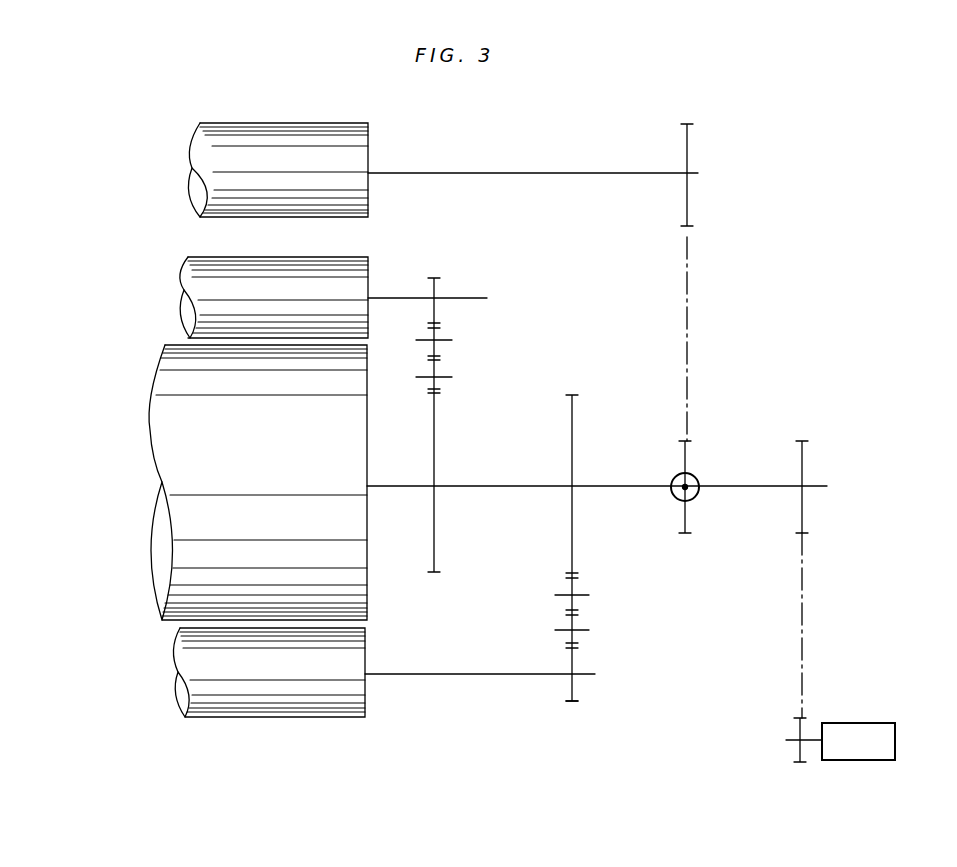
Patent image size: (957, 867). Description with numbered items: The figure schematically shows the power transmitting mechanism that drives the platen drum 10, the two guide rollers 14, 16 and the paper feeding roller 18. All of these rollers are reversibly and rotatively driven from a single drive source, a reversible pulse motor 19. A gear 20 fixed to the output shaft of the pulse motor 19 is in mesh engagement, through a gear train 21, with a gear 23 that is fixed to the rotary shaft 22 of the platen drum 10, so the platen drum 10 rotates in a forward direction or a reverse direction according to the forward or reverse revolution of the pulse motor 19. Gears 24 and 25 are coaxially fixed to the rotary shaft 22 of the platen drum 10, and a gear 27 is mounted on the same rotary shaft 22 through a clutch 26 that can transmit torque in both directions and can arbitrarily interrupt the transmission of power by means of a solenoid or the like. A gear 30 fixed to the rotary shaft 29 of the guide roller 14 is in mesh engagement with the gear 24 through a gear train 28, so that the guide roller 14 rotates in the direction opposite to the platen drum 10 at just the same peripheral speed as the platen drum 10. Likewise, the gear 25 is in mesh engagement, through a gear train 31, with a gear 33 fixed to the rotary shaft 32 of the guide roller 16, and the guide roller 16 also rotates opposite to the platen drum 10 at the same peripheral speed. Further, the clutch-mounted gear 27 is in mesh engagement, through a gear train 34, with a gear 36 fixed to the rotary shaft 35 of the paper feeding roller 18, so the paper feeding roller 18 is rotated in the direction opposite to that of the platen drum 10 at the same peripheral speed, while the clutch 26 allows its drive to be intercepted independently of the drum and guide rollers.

The platen drum 10 is at (154, 565).
The guide roller 14 is at (185, 322).
The guide roller 16 is at (178, 702).
The paper feeding roller 18 is at (345, 140).
The reversible pulse motor 19 is at (895, 740).
The gear 20 is at (800, 750).
The gear train 21 is at (801, 612).
The rotary shaft 22 is at (757, 487).
The gear 23 is at (803, 518).
The gear 24 is at (434, 444).
The gear 25 is at (572, 445).
The clutch 26 is at (699, 480).
The gear 27 is at (687, 452).
The gear train 28 is at (462, 325).
The rotary shaft 29 is at (402, 298).
The gear 30 is at (436, 292).
The gear train 31 is at (595, 585).
The rotary shaft 32 is at (463, 674).
The gear 33 is at (574, 688).
The gear train 34 is at (687, 346).
The rotary shaft 35 is at (529, 173).
The gear 36 is at (687, 162).